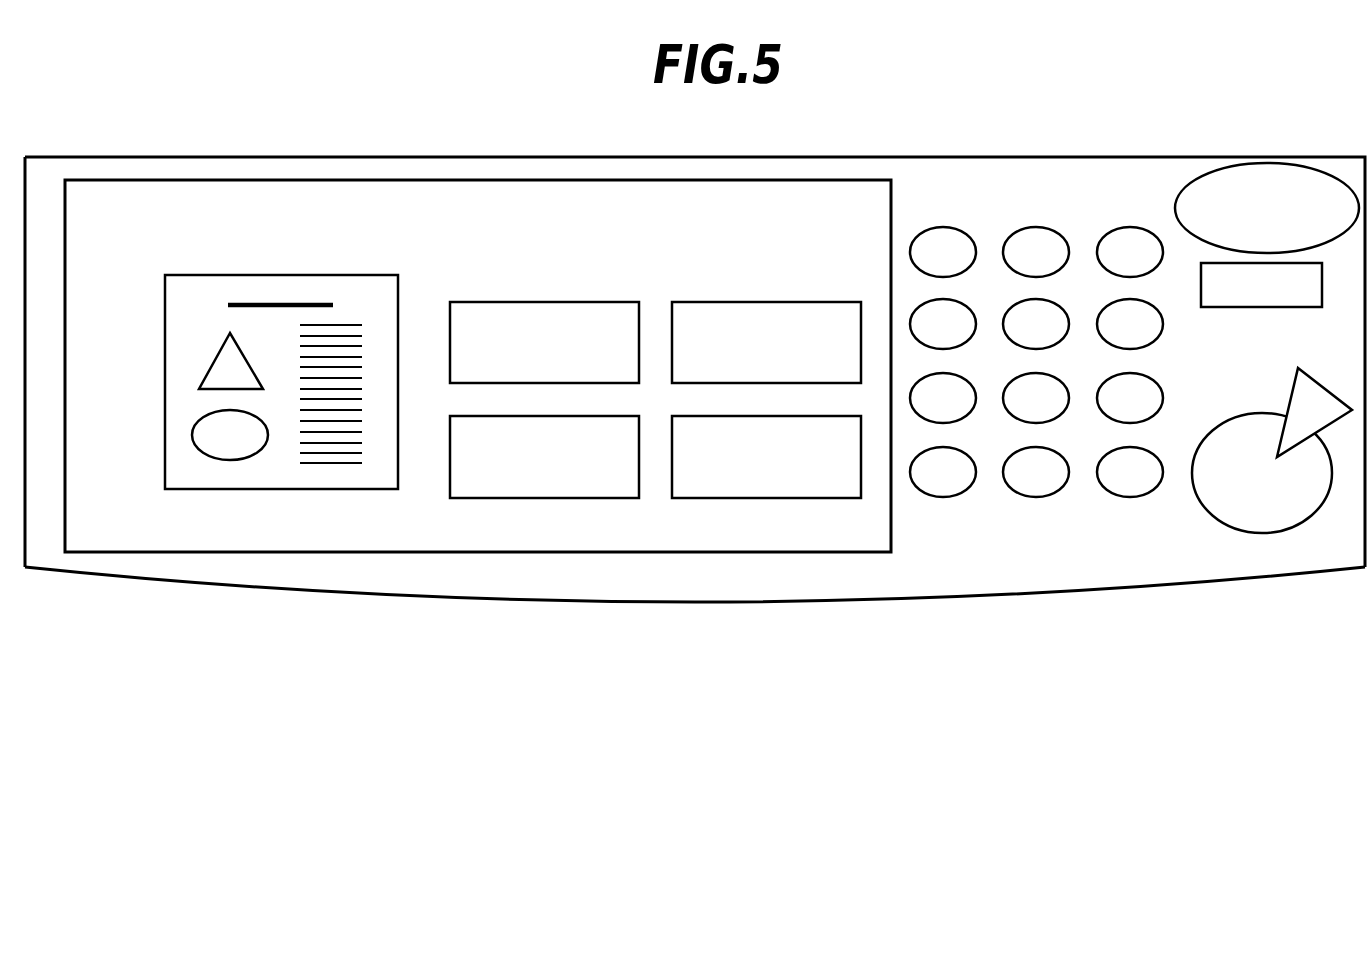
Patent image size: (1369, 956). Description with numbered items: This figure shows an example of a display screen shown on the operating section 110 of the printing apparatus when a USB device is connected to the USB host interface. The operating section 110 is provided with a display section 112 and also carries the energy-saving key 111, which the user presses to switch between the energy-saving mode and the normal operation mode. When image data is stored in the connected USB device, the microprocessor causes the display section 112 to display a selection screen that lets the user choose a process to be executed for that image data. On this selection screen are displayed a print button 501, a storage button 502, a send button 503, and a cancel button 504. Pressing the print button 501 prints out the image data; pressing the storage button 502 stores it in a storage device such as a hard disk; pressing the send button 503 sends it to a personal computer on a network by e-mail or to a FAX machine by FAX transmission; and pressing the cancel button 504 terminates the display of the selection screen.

The operating section 110 is at (1018, 558).
The energy-saving key 111 is at (1268, 172).
The display section 112 is at (457, 552).
The print button 501 is at (513, 302).
The storage button 502 is at (733, 302).
The send button 503 is at (522, 498).
The cancel button 504 is at (743, 498).